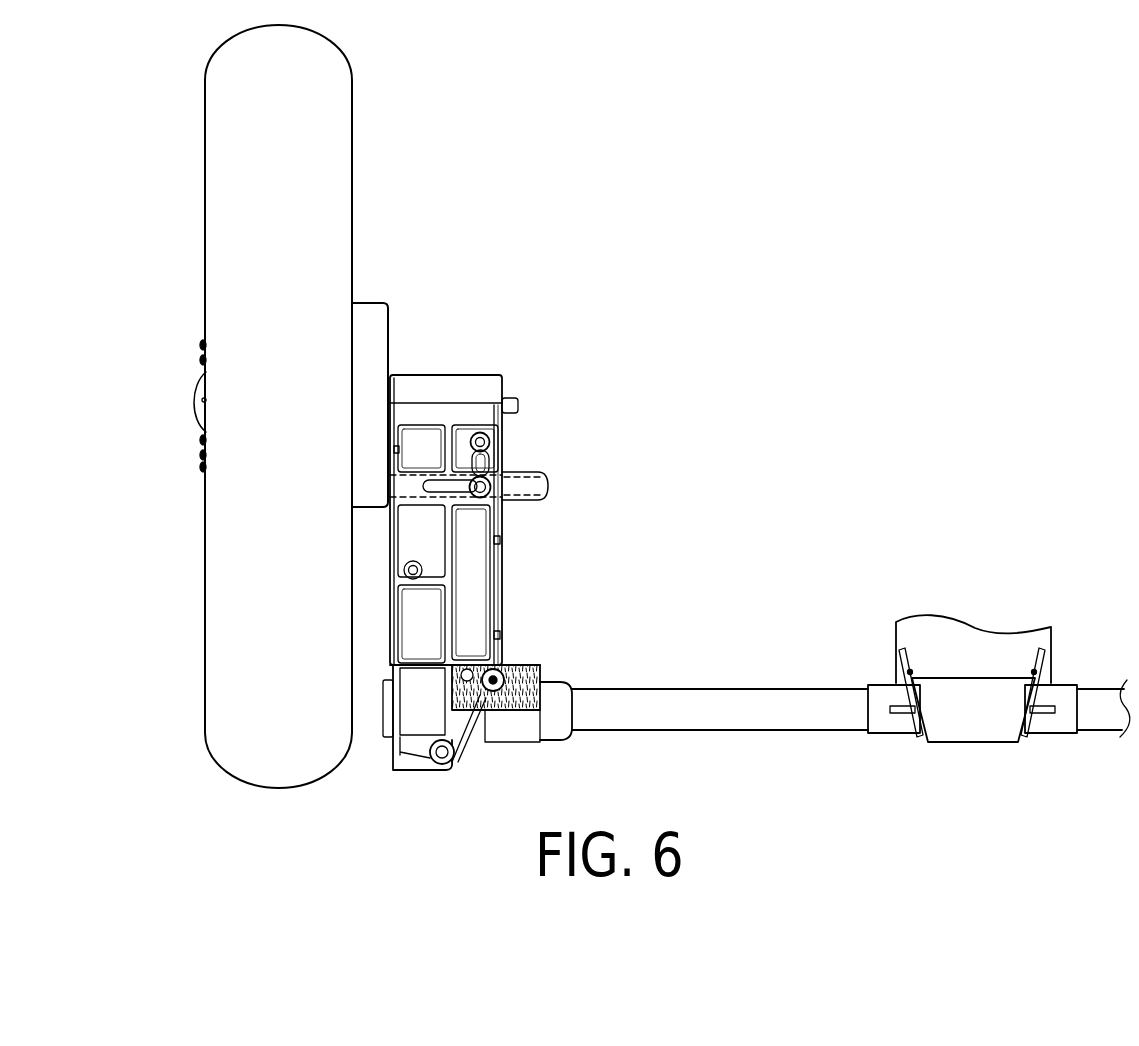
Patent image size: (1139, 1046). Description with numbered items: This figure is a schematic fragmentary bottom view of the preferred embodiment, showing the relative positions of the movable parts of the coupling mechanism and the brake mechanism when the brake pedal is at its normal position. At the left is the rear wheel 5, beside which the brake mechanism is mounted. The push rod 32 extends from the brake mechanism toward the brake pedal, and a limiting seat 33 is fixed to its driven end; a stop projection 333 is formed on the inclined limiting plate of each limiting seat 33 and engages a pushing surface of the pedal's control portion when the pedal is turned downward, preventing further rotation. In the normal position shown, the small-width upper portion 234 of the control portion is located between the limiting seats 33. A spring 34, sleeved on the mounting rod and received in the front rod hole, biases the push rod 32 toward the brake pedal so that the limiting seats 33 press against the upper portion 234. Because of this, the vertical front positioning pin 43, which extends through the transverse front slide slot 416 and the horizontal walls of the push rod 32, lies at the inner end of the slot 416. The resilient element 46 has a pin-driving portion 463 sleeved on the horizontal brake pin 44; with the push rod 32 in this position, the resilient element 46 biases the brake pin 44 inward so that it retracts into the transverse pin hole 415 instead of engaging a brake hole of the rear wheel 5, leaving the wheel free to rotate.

The rear wheel 5 is at (345, 258).
The horizontal brake pin 44 is at (405, 490).
The transverse pin hole 415 is at (492, 430).
The pin-driving portion 463 is at (487, 460).
The resilient element 46 is at (493, 570).
The vertical front positioning pin 43 is at (505, 663).
The transverse front slide slot 416 is at (485, 670).
The spring 34 is at (553, 673).
The push rod 32 is at (712, 700).
The limiting seat 33 is at (888, 725).
The stop projection 333 is at (912, 672).
The small-width upper portion 234 is at (969, 670).